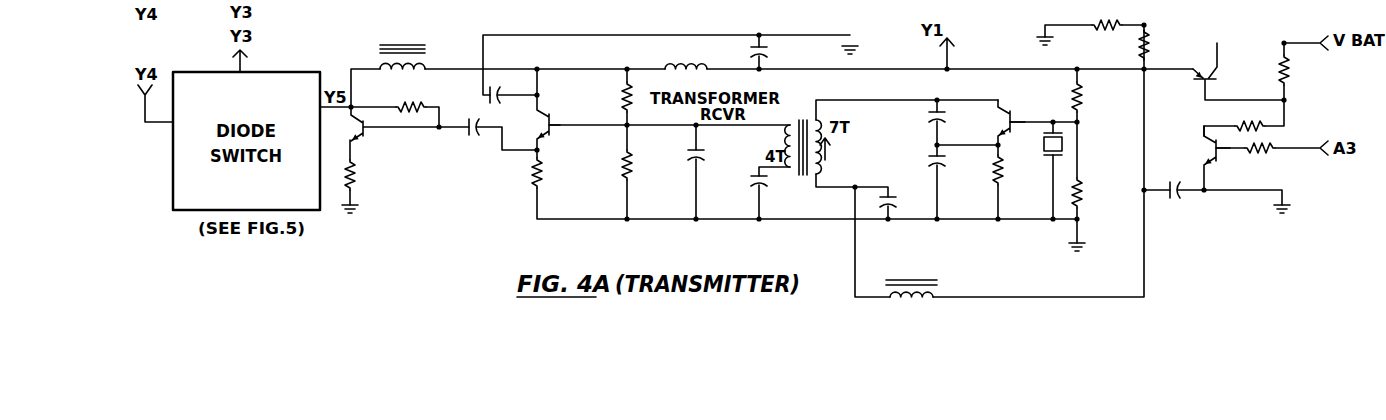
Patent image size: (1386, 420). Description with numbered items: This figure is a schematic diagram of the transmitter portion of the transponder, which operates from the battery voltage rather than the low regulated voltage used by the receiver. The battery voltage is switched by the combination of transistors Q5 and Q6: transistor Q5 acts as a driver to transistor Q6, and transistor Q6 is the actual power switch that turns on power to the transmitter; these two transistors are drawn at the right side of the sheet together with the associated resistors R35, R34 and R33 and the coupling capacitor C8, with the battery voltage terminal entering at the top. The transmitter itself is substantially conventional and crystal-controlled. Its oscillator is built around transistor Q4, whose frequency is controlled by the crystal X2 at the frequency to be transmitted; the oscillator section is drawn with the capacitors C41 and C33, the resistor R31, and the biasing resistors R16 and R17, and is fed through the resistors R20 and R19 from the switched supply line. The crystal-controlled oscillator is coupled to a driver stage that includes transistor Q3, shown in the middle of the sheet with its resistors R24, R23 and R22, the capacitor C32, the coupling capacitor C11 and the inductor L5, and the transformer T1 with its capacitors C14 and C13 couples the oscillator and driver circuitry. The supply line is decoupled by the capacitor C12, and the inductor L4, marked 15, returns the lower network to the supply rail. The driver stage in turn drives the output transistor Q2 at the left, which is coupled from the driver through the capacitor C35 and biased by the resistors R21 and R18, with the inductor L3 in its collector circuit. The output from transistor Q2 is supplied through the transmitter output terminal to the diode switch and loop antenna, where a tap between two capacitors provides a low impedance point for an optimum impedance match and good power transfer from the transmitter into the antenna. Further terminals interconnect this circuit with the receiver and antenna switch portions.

The inductor L3 is at (402, 48).
The resistor R21 is at (414, 97).
The output transistor Q2 is at (395, 130).
The resistor R18 is at (376, 175).
The capacitor C35 is at (473, 139).
The capacitor C11 is at (513, 102).
The driver stage transistor Q3 is at (557, 123).
The resistor R22 is at (557, 173).
The resistor R24 is at (609, 97).
The resistor R23 is at (646, 165).
The capacitor C32 is at (712, 166).
The inductor L5 is at (686, 56).
The capacitor C12 is at (779, 52).
The transformer T1 is at (807, 136).
The capacitor C14 is at (777, 191).
The capacitor C13 is at (908, 201).
The inductor L4 is at (911, 278).
The inductor L4 15 is at (927, 279).
The capacitor C41 is at (956, 117).
The capacitor C33 is at (956, 164).
The oscillator transistor Q4 is at (1019, 122).
The crystal X2 is at (1040, 145).
The resistor R31 is at (1016, 170).
The resistor R16 is at (1096, 97).
The resistor R17 is at (1096, 193).
The resistor R20 is at (1107, 15).
The resistor R19 is at (1163, 45).
The power switch transistor Q6 is at (1236, 71).
The resistor R35 is at (1304, 70).
The resistor R34 is at (1249, 117).
The driver transistor Q5 is at (1204, 158).
The resistor R33 is at (1266, 158).
The capacitor C8 is at (1176, 203).